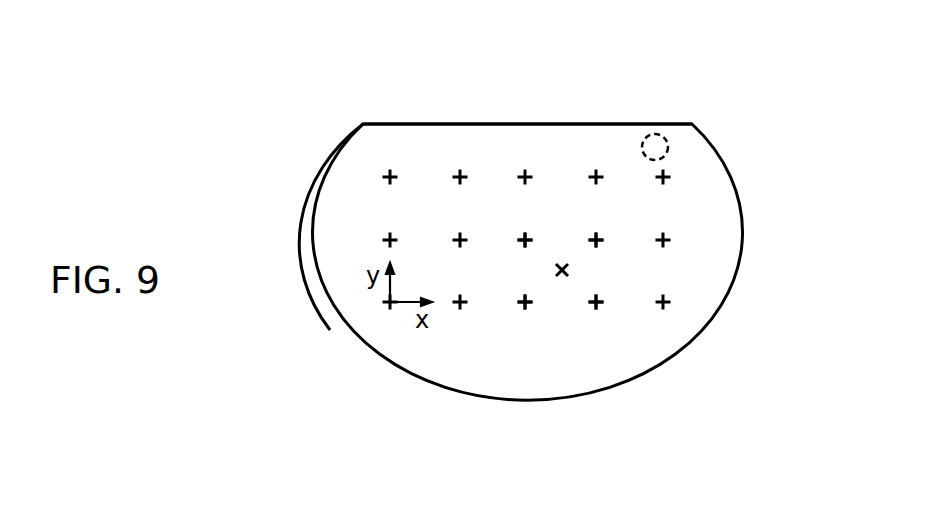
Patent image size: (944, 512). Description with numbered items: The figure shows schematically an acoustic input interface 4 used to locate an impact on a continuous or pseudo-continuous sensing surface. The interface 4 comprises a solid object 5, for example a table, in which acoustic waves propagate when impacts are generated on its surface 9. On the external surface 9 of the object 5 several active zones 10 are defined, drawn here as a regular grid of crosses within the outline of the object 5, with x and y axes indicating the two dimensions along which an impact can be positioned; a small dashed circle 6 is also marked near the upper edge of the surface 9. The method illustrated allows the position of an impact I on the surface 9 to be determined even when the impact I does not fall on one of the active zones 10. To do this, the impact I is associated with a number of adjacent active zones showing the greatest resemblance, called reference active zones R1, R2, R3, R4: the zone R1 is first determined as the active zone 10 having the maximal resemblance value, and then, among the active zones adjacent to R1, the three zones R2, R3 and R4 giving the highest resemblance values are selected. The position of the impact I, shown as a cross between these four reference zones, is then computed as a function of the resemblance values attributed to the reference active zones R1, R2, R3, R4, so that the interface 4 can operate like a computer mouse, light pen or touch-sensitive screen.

The acoustic input interface 4 is at (565, 120).
The solid object 5 is at (730, 172).
The reference mark 6 is at (665, 139).
The surface 9 is at (345, 194).
The active zones 10 is at (386, 303).
The reference active zone R1 is at (523, 243).
The reference active zone R2 is at (524, 305).
The reference active zone R3 is at (597, 305).
The reference active zone R4 is at (598, 243).
The impact I is at (563, 274).